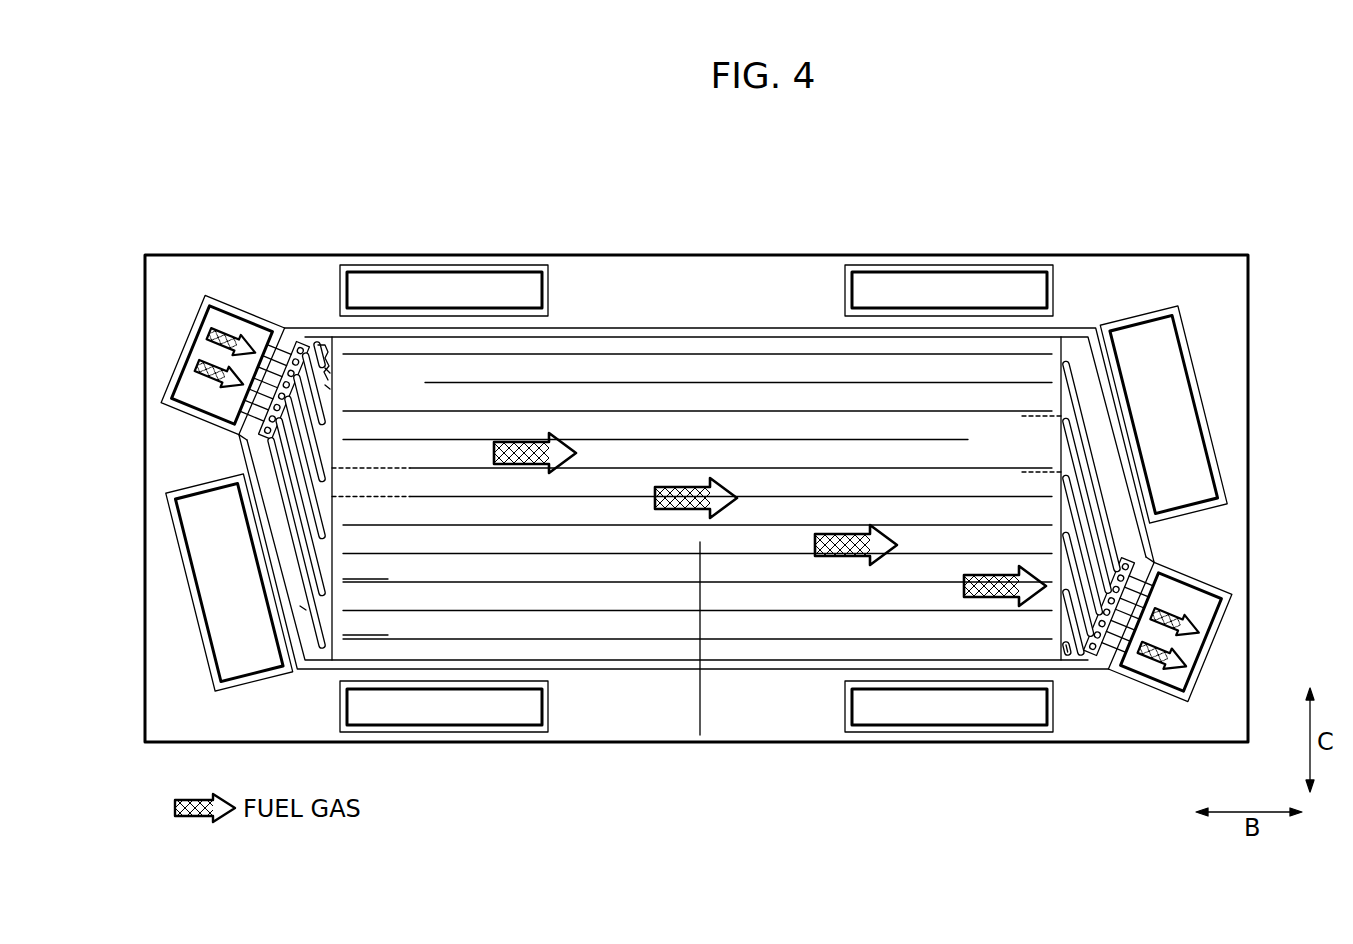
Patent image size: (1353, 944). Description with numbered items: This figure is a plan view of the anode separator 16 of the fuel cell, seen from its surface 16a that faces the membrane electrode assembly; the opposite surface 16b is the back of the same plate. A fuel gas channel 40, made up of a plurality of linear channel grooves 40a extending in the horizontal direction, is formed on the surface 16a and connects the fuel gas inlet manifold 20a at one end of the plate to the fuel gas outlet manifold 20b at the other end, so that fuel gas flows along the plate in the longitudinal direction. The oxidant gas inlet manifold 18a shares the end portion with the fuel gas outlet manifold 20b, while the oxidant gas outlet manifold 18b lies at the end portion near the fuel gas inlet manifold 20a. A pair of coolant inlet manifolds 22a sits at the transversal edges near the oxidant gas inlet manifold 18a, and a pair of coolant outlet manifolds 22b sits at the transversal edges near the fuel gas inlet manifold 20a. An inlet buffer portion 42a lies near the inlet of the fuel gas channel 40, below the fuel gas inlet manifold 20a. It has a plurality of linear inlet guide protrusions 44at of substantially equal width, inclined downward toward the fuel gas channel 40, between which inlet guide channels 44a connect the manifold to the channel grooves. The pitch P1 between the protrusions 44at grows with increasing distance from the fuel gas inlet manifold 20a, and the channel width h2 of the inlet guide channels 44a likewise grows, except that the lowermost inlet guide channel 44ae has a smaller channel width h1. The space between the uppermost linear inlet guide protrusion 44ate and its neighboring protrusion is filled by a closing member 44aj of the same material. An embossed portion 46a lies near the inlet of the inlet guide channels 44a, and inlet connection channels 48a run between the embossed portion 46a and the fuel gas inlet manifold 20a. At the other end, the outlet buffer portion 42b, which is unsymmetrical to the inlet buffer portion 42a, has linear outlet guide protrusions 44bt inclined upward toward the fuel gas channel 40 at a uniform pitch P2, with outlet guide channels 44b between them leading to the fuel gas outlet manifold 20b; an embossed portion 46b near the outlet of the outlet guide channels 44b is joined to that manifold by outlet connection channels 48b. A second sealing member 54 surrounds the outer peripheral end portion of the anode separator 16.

The anode separator 16 is at (661, 134).
The surface of the anode separator 16a is at (775, 733).
The surface of the anode separator 16b is at (808, 715).
The oxidant gas inlet manifold 18a is at (1190, 460).
The oxidant gas outlet manifold 18b is at (200, 528).
The fuel gas inlet manifold 20a is at (192, 343).
The fuel gas outlet manifold 20b is at (1195, 612).
The coolant inlet manifolds 22a is at (937, 284).
The coolant outlet manifolds 22b is at (488, 284).
The fuel gas channel 40 is at (612, 603).
The channel grooves 40a is at (672, 597).
The inlet buffer portion 42a is at (265, 457).
The outlet buffer portion 42b is at (1128, 542).
The inlet guide channels 44a is at (290, 492).
The closing member 44aj is at (330, 373).
The linear inlet guide protrusions 44at is at (330, 389).
The uppermost linear inlet guide protrusion 44ate is at (330, 346).
The lowermost inlet guide channel 44ae is at (303, 608).
The outlet guide channels 44b is at (1080, 519).
The linear outlet guide protrusions 44bt is at (1078, 537).
The embossed portion 46a is at (303, 347).
The embossed portion 46b is at (1090, 652).
The inlet connection channels 48a is at (281, 350).
The outlet connection channels 48b is at (1118, 658).
The second sealing member 54 is at (620, 328).
The channel width of the lowermost inlet guide channel h1 is at (287, 650).
The channel width of the inlet guide channels h2 is at (287, 593).
The pitch between the linear inlet guide protrusions P1 is at (367, 468).
The pitch of the linear outlet guide protrusions P2 is at (1022, 416).